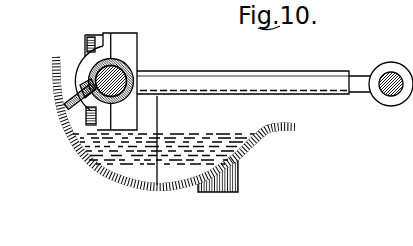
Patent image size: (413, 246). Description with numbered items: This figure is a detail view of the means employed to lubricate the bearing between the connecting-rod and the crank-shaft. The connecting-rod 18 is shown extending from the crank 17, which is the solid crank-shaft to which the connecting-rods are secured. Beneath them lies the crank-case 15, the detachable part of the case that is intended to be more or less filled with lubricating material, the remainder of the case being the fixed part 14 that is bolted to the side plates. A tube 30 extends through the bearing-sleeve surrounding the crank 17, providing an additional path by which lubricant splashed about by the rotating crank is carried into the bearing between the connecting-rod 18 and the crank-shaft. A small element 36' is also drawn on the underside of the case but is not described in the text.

The case part 14 is at (237, 157).
The crank-case 15 is at (98, 166).
The crank-shaft 17 is at (118, 77).
The connecting-rod 18 is at (243, 89).
The tube 30 is at (60, 97).
The block 36' is at (240, 187).